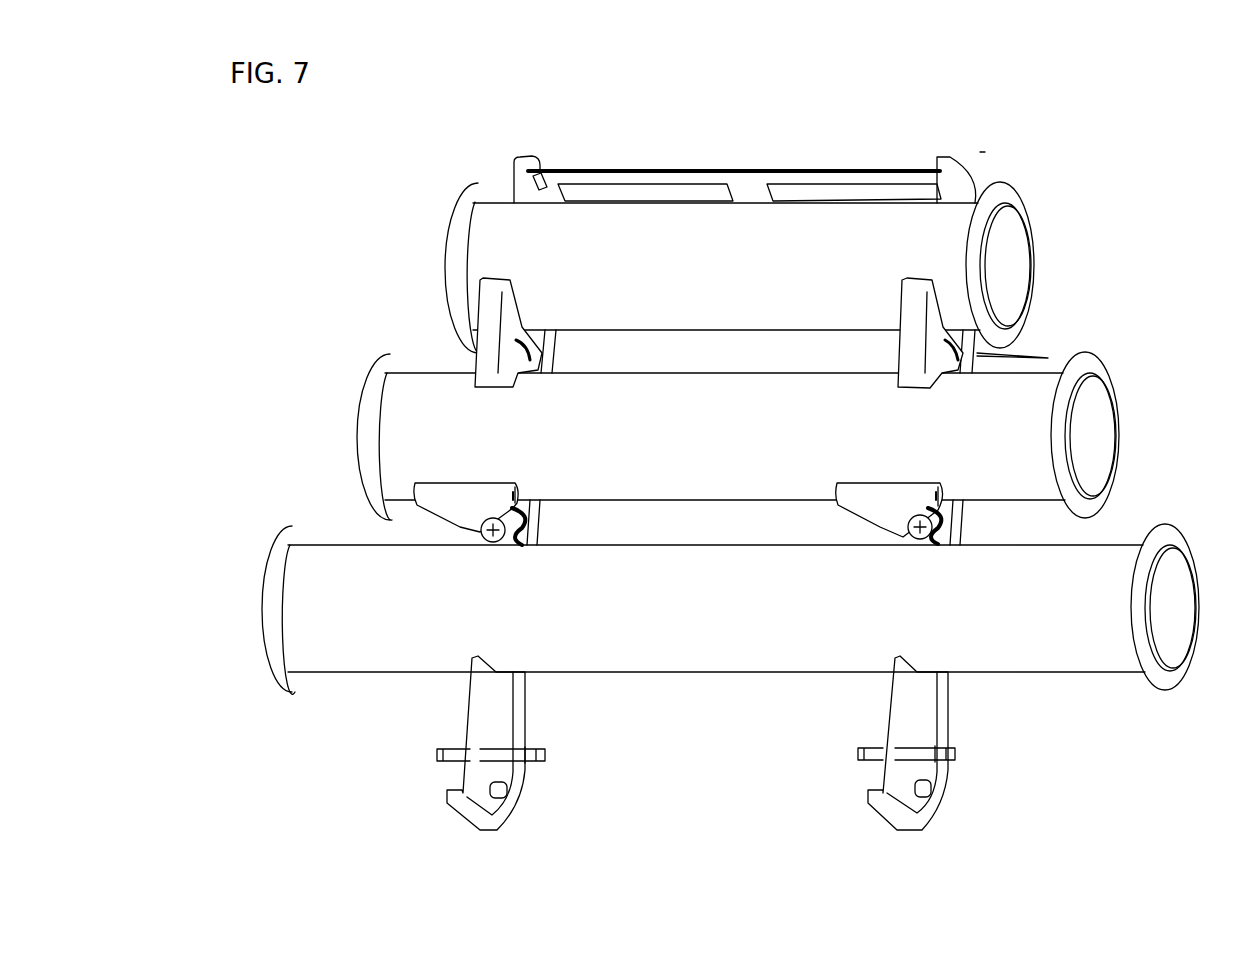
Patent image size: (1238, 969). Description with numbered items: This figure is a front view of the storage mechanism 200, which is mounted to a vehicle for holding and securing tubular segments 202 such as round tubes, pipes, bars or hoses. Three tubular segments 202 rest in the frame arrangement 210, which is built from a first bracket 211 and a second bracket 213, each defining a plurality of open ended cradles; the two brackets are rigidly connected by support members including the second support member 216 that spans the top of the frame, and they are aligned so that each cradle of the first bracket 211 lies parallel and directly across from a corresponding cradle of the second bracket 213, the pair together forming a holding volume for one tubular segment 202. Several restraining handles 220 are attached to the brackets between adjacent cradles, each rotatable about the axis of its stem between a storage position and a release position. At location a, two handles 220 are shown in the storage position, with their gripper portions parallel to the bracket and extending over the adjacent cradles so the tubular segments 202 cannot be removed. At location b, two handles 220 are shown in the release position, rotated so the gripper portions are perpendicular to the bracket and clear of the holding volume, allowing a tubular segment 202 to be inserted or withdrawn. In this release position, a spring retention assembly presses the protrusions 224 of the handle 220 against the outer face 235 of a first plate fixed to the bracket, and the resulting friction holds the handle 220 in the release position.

The storage mechanism 200 is at (736, 466).
The tubular segment 202 is at (702, 283).
The frame arrangement 210 is at (983, 152).
The first bracket 211 is at (915, 707).
The second bracket 213 is at (487, 722).
The second support member 216 is at (658, 168).
The restraining handle 220 is at (470, 295).
The protrusion 224 is at (530, 528).
The outer face of first plate 235 is at (505, 520).
The location a is at (480, 363).
The location b is at (480, 532).